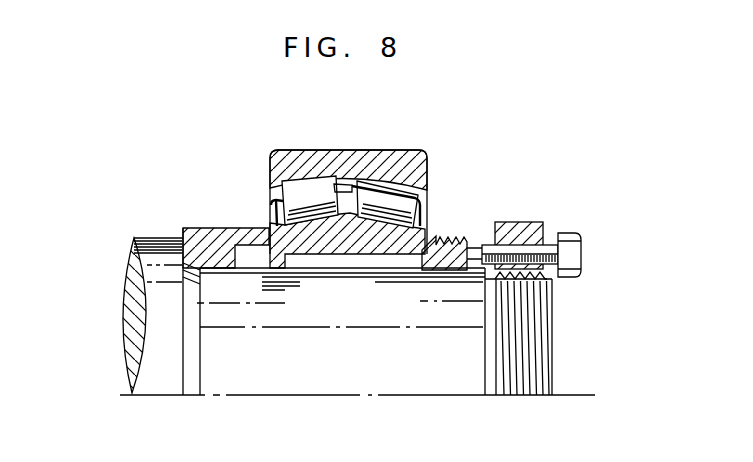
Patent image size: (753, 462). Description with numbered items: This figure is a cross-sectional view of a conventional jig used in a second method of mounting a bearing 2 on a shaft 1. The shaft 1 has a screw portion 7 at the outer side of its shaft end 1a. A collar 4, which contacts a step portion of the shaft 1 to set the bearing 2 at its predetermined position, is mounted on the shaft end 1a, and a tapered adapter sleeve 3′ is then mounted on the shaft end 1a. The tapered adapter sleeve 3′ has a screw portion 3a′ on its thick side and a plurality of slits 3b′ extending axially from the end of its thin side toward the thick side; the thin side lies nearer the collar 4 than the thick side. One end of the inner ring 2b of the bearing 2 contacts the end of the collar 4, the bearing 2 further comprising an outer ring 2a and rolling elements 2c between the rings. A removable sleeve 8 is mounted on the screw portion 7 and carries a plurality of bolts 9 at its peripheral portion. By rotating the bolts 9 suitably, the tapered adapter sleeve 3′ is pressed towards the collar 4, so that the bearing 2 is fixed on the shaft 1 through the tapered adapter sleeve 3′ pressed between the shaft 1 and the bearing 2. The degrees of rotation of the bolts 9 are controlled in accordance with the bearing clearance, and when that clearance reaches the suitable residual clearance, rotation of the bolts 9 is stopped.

The shaft 1 is at (160, 292).
The shaft end 1a is at (353, 367).
The bearing 2 is at (399, 143).
The outer ring 2a is at (313, 158).
The inner ring 2b is at (350, 233).
The rollers 2c is at (294, 200).
The tapered adapter sleeve 3′ is at (388, 277).
The screw portion 3a′ is at (438, 242).
The slits 3b′ is at (301, 265).
The collar 4 is at (218, 238).
The screw portion 7 is at (544, 341).
The removable sleeve 8 is at (516, 222).
The bolts 9 is at (577, 255).